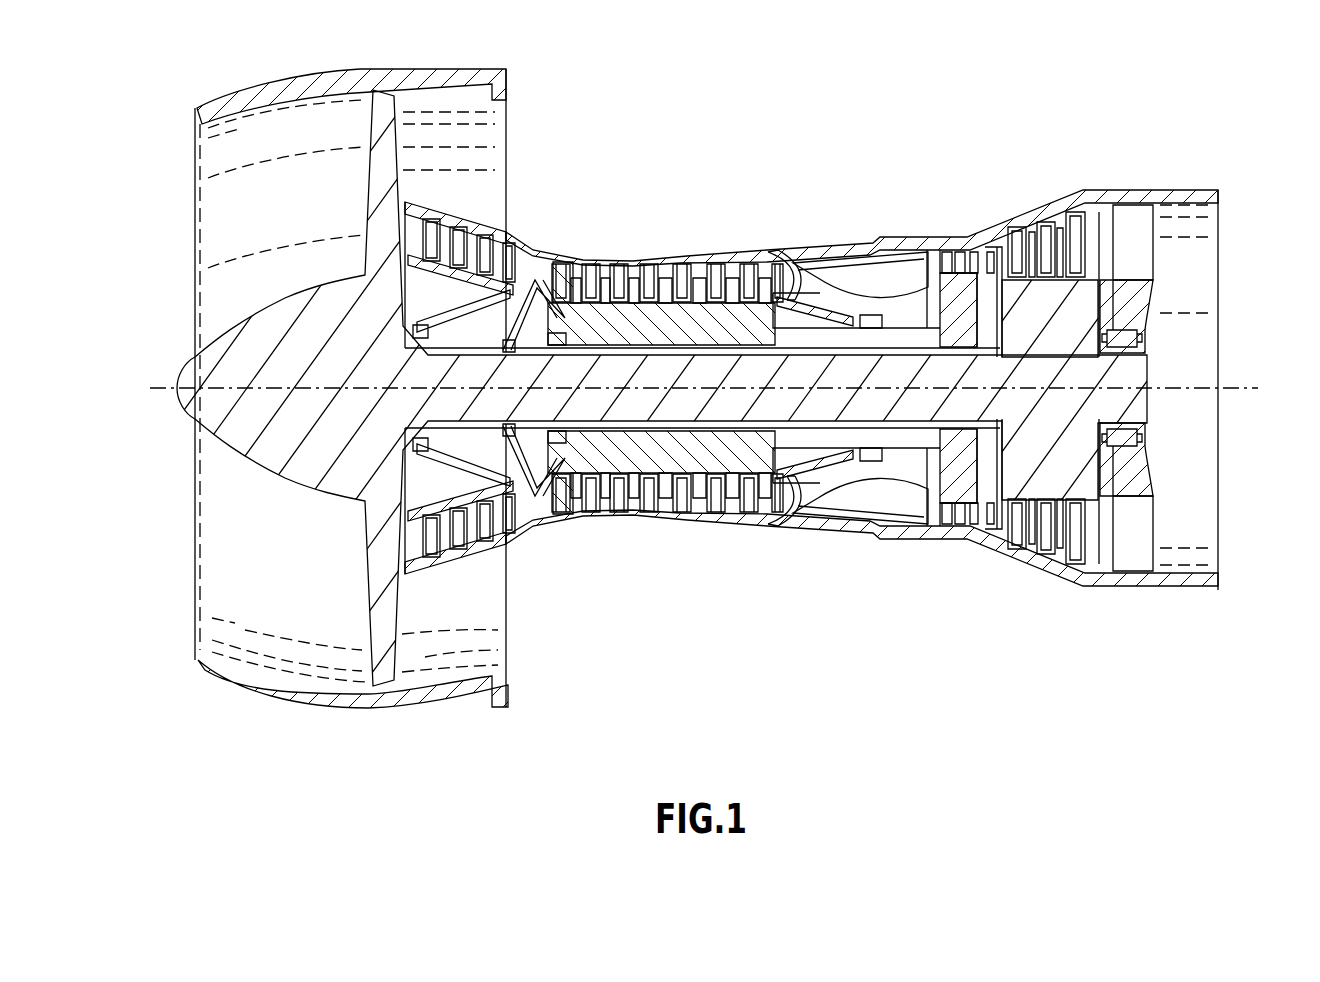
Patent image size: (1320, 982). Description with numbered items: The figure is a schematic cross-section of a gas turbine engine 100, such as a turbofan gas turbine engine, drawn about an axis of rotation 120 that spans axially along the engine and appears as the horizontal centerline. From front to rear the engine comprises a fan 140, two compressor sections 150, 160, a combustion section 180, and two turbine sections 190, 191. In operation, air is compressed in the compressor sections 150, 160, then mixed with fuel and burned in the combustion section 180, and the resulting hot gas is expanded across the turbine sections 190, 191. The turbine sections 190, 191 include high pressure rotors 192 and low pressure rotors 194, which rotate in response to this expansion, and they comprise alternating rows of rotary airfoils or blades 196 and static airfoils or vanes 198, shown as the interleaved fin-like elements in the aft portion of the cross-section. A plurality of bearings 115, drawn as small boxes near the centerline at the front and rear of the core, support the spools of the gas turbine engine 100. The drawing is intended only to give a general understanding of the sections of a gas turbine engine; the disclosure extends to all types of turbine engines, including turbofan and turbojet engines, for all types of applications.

The gas turbine engine 100 is at (955, 113).
The bearings 115 is at (575, 320).
The axis of rotation 120 is at (160, 388).
The fan 140 is at (397, 150).
The compressor section 150 is at (505, 720).
The compressor section 160 is at (577, 540).
The combustion section 180 is at (797, 568).
The turbine section 190 is at (983, 568).
The turbine section 191 is at (1100, 597).
The high pressure rotors 192 is at (973, 262).
The low pressure rotors 194 is at (1085, 312).
The blades 196 is at (1035, 230).
The vanes 198 is at (1043, 225).